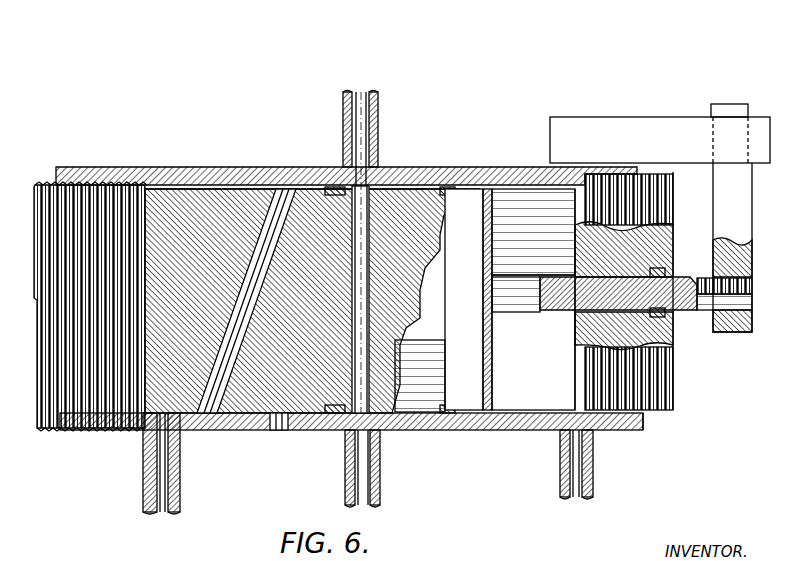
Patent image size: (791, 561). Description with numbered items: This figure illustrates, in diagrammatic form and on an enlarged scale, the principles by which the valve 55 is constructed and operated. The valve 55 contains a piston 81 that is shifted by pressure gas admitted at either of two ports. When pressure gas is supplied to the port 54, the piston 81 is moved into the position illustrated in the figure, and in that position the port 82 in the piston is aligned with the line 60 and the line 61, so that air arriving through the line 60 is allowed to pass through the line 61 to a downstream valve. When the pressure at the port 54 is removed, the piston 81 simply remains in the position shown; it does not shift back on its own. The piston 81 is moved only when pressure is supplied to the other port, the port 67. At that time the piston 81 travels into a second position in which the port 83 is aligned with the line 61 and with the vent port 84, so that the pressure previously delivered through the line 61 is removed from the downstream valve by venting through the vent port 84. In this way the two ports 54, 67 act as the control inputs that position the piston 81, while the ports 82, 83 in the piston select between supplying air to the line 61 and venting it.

The valve 55 is at (262, 153).
The line 61 is at (345, 125).
The line 60 is at (379, 460).
The port 67 is at (148, 432).
The port 83 is at (212, 430).
The vent port 84 is at (283, 432).
The port 82 is at (383, 432).
The piston 81 is at (470, 366).
The port 54 is at (582, 426).